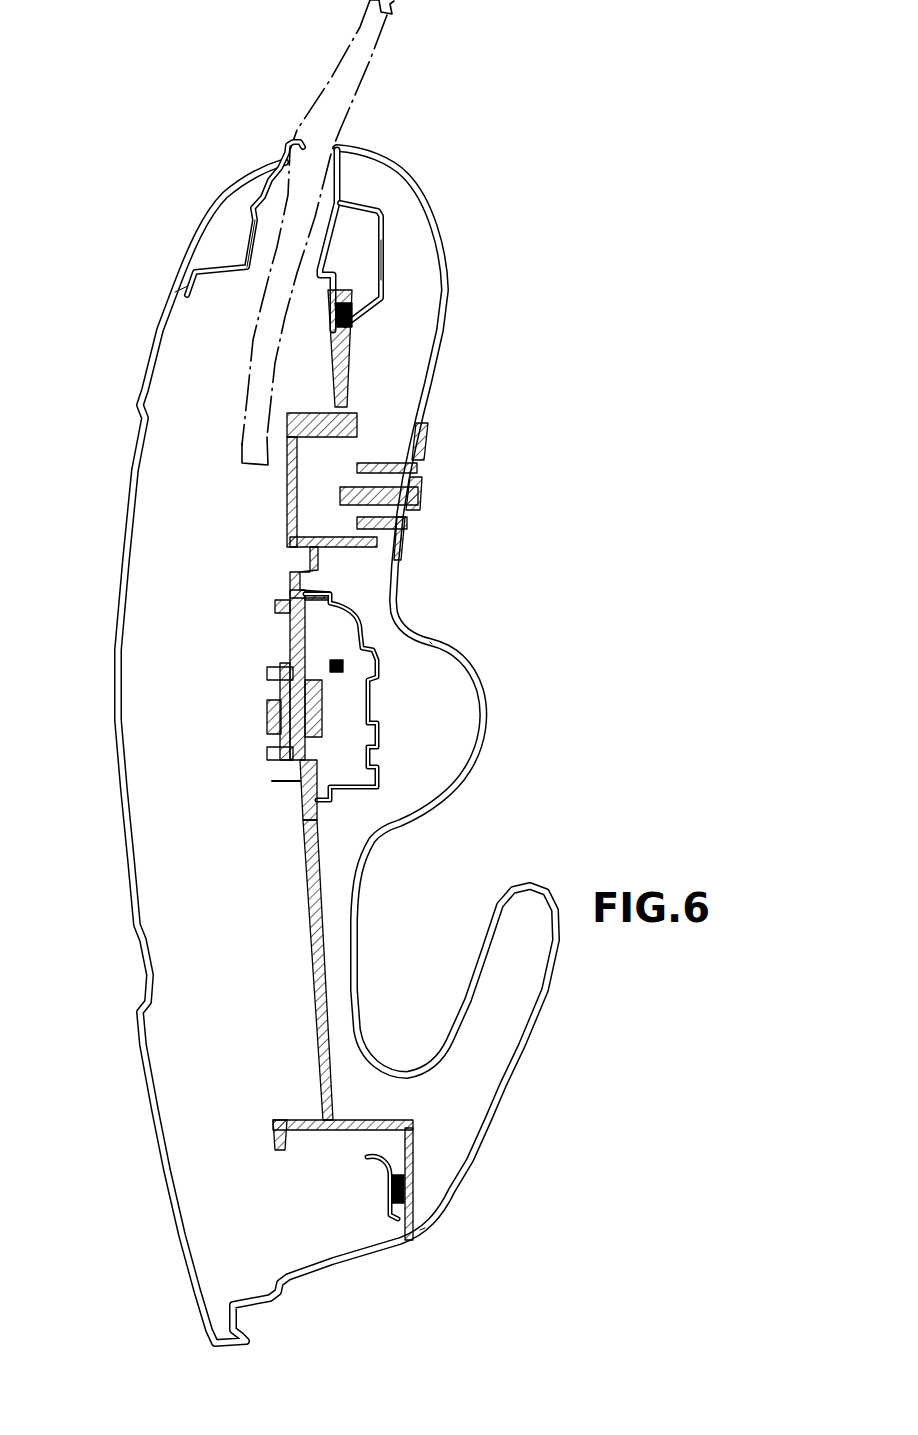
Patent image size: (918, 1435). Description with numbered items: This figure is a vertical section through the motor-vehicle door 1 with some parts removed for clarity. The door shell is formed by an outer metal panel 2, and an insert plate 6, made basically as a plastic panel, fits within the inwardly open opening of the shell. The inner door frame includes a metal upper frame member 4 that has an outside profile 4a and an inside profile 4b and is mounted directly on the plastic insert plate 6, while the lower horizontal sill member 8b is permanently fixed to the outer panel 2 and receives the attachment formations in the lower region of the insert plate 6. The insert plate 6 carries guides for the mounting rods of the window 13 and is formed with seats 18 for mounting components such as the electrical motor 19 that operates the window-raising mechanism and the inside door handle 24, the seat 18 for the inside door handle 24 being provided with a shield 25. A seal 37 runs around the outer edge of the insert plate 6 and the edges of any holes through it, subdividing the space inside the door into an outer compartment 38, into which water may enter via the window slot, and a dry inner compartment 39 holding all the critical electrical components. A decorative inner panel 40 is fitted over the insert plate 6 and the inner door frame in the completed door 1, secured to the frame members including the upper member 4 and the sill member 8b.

The motor-vehicle door 1 is at (100, 688).
The outer metal panel 2 is at (132, 553).
The upper frame member 4 is at (405, 226).
The outside profile 4a is at (327, 230).
The inside profile 4b is at (380, 257).
The insert plate 6 is at (300, 853).
The lower horizontal sill member 8b is at (433, 1213).
The window 13 is at (340, 83).
The seat 18 is at (287, 527).
The electrical motor 19 is at (287, 793).
The inside door handle 24 is at (420, 497).
The shield 25 is at (425, 442).
The seal 37 is at (367, 337).
The outer compartment 38 is at (208, 347).
The inner compartment 39 is at (407, 370).
The decorative inner panel 40 is at (427, 633).